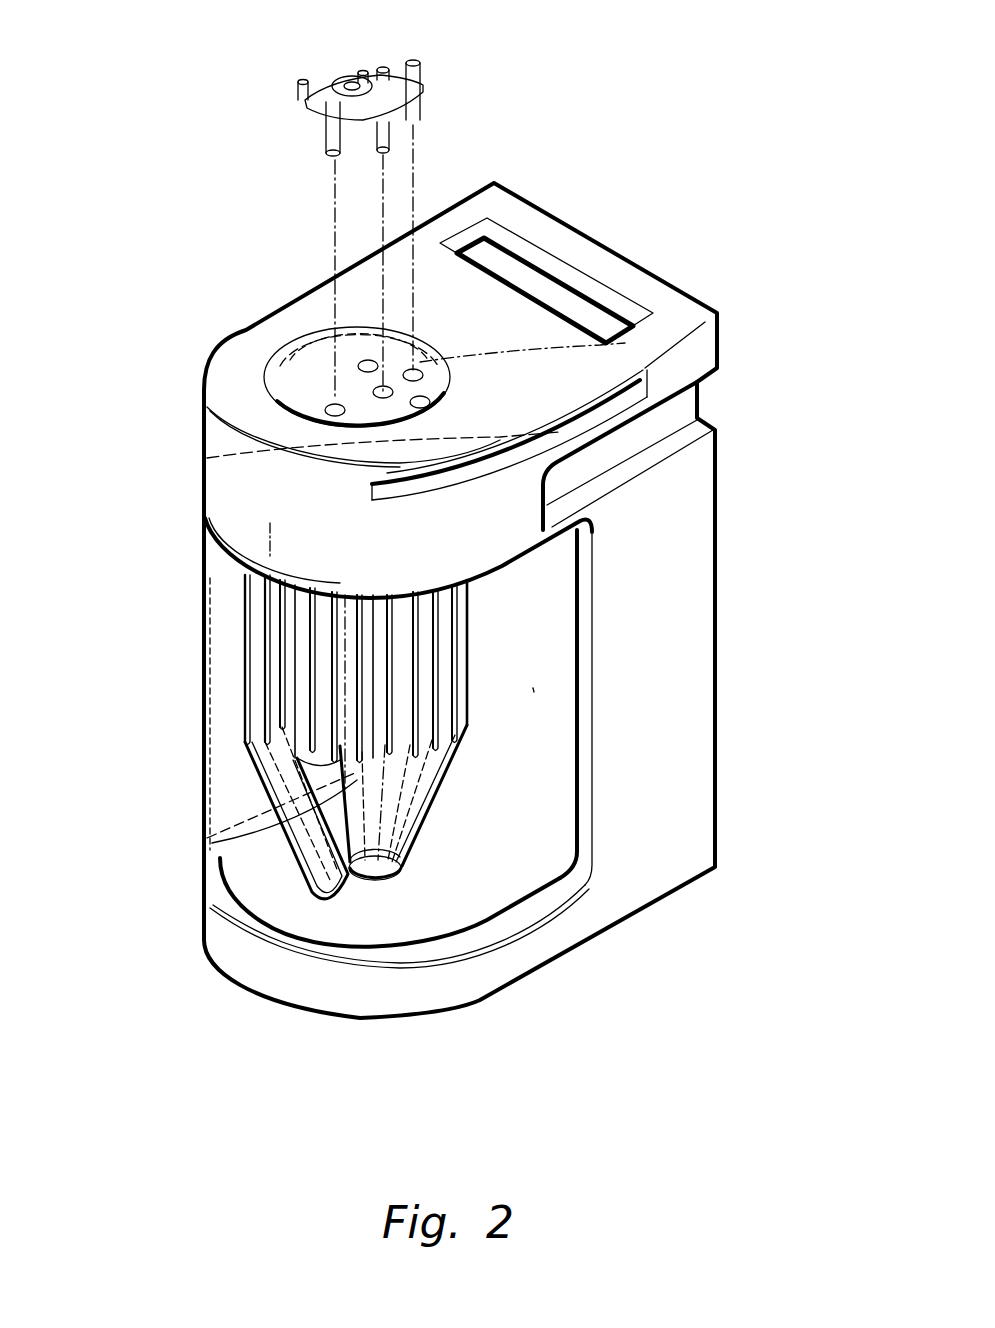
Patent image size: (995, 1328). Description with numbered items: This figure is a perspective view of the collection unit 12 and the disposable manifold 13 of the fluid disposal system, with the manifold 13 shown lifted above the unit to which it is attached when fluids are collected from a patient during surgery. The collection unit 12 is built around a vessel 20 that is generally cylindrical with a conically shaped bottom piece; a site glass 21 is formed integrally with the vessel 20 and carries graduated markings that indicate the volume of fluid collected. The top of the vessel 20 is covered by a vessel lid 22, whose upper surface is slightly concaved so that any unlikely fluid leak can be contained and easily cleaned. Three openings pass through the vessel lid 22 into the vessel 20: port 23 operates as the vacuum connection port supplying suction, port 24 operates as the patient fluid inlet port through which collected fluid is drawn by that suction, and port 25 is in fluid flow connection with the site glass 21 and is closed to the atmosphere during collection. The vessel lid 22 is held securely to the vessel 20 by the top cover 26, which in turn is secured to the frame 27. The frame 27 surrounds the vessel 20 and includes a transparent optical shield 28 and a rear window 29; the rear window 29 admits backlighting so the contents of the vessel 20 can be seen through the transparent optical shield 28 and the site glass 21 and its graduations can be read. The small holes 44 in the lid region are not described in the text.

The collection unit 12 is at (716, 395).
The disposable manifold 13 is at (400, 50).
The vessel 20 is at (394, 815).
The site glass 21 is at (256, 683).
The vessel lid 22 is at (284, 396).
The port 23 is at (415, 360).
The port 24 is at (383, 395).
The port 25 is at (340, 413).
The top cover 26 is at (240, 570).
The frame 27 is at (687, 605).
The transparent optical shield 28 is at (218, 805).
The rear window 29 is at (533, 688).
The holes 44 is at (358, 362).